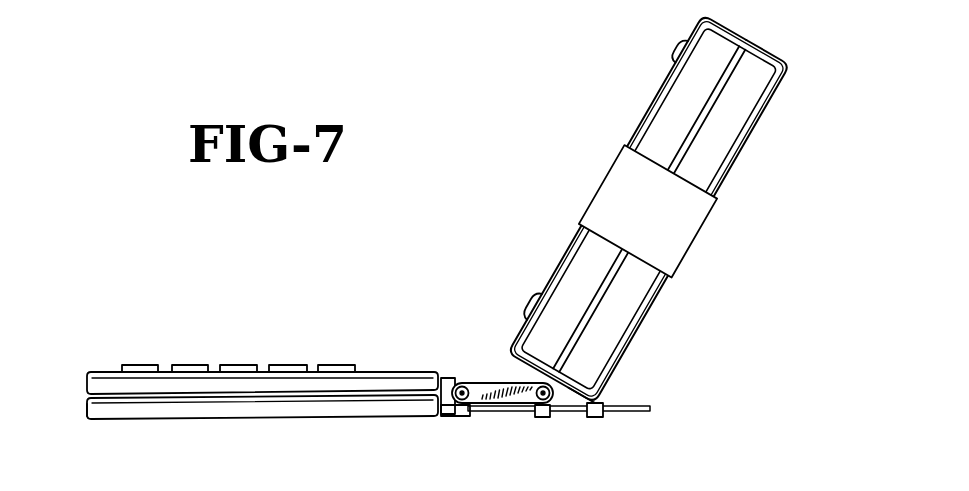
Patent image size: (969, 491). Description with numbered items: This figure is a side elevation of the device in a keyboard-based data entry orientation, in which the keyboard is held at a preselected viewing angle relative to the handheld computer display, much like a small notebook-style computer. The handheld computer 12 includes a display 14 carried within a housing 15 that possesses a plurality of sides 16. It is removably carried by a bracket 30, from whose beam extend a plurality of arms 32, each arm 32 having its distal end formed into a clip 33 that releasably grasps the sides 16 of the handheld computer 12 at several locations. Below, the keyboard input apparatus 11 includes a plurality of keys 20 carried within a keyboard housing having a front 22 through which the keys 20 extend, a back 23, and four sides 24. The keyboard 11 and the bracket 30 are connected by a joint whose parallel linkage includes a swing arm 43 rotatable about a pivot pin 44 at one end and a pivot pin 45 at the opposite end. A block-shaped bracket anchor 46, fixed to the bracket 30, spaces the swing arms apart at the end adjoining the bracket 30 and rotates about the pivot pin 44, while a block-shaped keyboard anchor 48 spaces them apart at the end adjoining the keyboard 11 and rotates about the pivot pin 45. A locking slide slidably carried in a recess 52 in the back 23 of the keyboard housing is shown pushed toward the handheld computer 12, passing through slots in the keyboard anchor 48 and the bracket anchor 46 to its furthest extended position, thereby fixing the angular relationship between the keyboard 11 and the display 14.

The keyboard input apparatus 11 is at (335, 417).
The handheld computer 12 is at (565, 253).
The display 14 is at (657, 100).
The housing 15 is at (740, 127).
The sides 16 is at (568, 293).
The keys 20 is at (140, 365).
The front 22 is at (381, 371).
The back 23 is at (217, 419).
The sides 24 is at (87, 408).
The bracket 30 is at (653, 310).
The arms 32 is at (733, 172).
The clip 33 is at (681, 47).
The swing arm 43 is at (493, 405).
The pivot pin 44 is at (550, 408).
The pivot pin 45 is at (462, 387).
The bracket anchor 46 is at (552, 415).
The keyboard anchor 48 is at (460, 416).
The recess 52 is at (641, 406).